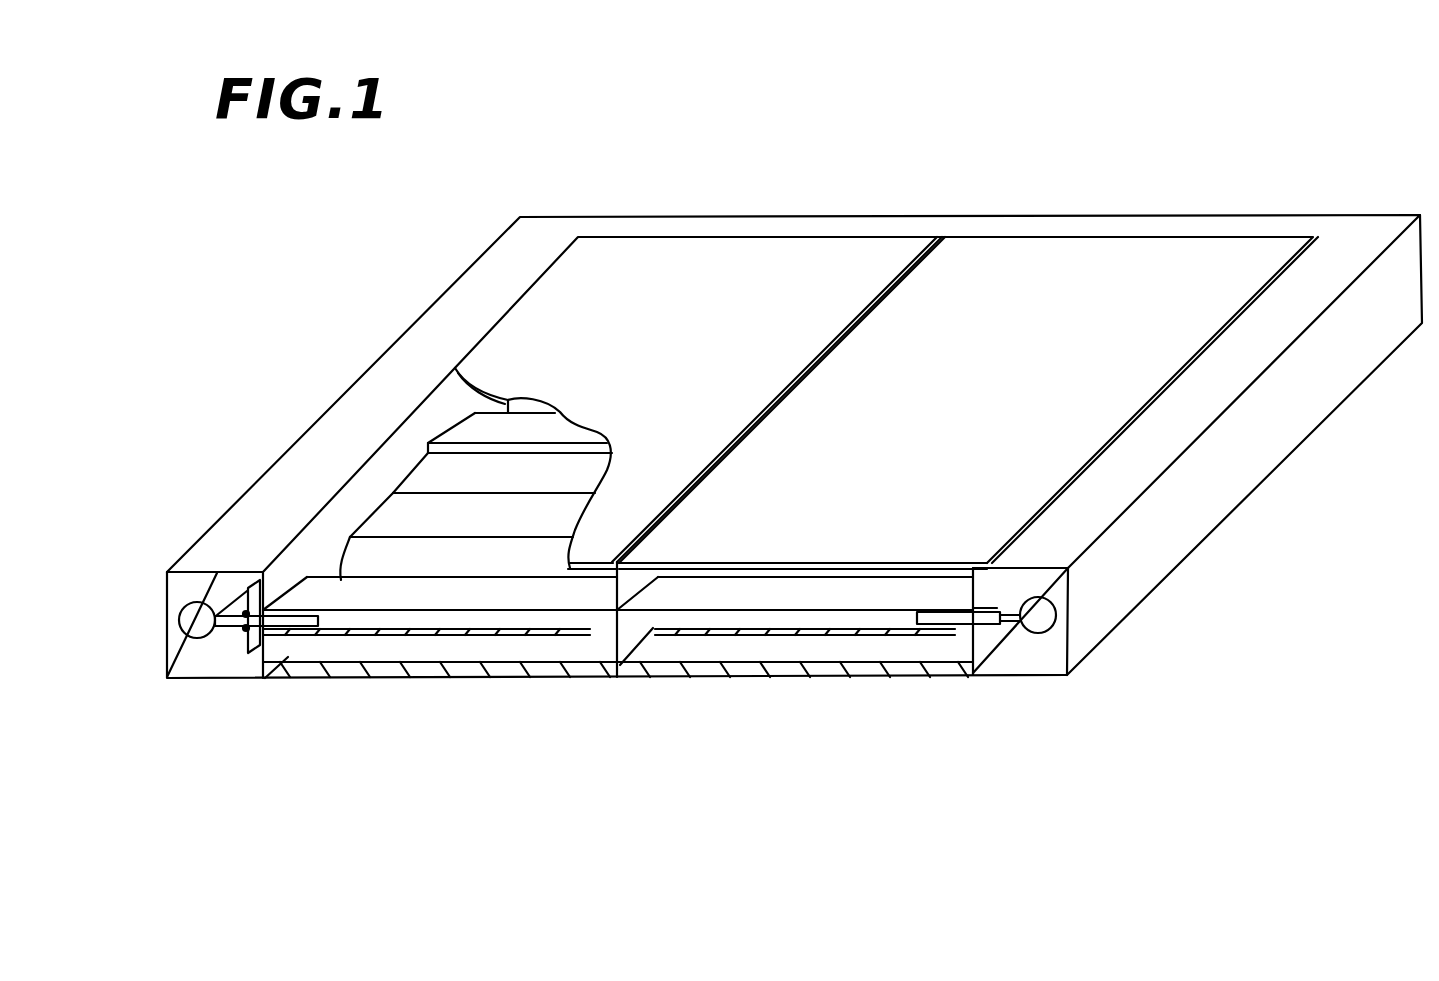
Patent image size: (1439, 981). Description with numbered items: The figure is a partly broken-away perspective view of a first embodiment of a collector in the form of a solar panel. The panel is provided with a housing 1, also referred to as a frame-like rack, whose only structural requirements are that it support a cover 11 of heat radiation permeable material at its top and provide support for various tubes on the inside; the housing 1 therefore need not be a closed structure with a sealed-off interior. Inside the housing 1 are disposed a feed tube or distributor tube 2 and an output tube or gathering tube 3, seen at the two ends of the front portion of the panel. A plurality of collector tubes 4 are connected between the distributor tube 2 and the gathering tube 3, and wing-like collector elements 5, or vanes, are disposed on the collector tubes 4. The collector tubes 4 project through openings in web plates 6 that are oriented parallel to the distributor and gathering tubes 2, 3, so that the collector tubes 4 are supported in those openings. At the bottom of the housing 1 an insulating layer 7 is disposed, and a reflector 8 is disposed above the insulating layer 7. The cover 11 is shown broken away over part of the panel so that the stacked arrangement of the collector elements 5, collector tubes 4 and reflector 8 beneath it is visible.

The housing 1 is at (376, 358).
The distributor tube 2 is at (183, 643).
The gathering tube 3 is at (1040, 623).
The collector tubes 4 is at (462, 448).
The collector elements 5 is at (437, 475).
The web plates 6 is at (273, 643).
The insulating layer 7 is at (833, 665).
The reflector 8 is at (425, 522).
The cover 11 is at (680, 324).